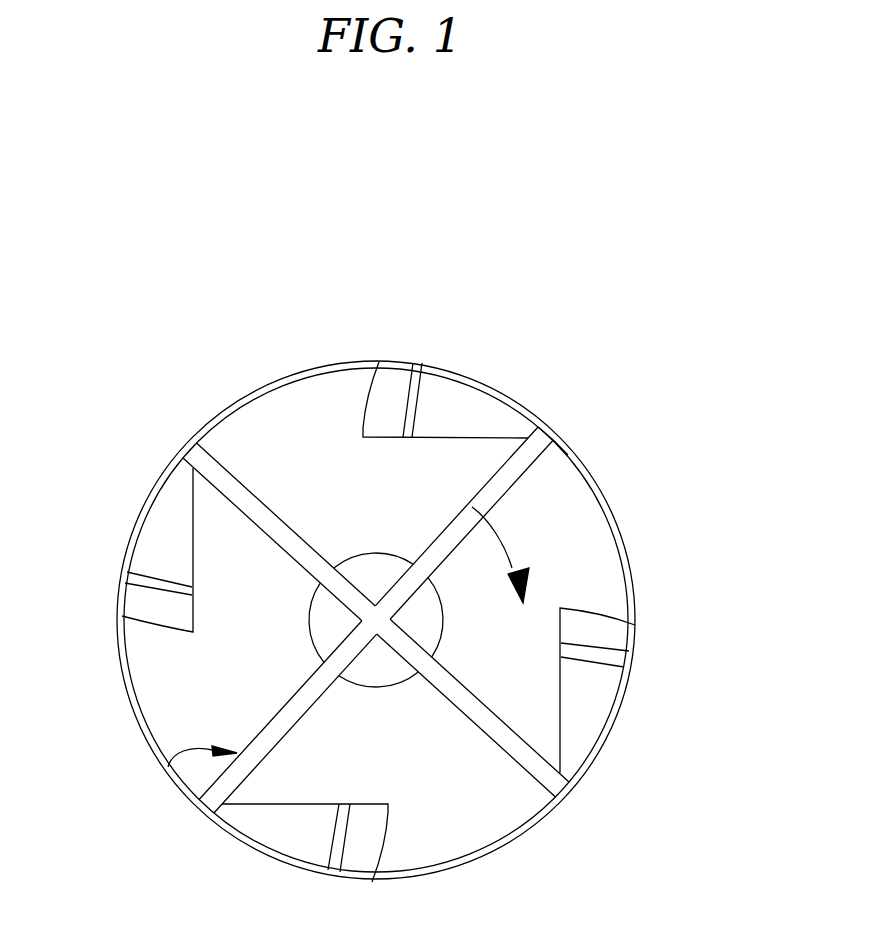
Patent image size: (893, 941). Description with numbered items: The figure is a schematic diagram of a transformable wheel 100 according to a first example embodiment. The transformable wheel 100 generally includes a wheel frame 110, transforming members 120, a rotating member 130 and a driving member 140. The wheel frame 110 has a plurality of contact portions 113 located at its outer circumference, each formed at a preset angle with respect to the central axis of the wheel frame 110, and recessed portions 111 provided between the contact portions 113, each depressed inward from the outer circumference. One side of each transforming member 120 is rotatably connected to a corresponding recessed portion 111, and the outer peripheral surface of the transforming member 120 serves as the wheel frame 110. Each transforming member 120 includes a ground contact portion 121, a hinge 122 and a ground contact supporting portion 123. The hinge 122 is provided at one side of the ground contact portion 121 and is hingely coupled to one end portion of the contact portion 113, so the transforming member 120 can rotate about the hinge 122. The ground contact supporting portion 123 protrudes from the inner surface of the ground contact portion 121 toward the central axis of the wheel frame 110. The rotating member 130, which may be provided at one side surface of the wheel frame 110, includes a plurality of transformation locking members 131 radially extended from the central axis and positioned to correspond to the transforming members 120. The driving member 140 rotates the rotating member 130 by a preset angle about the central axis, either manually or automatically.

The transformable wheel 100 is at (387, 176).
The wheel frame 110 is at (259, 425).
The recessed portion 111 is at (172, 537).
The contact portion 113 is at (323, 372).
The transforming member 120 is at (450, 332).
The ground contact portion 121 is at (468, 380).
The hinge 122 is at (550, 436).
The ground contact supporting portion 123 is at (413, 387).
The rotating member 130 is at (167, 768).
The transformation locking member 131 is at (507, 486).
The driving member 140 is at (428, 632).